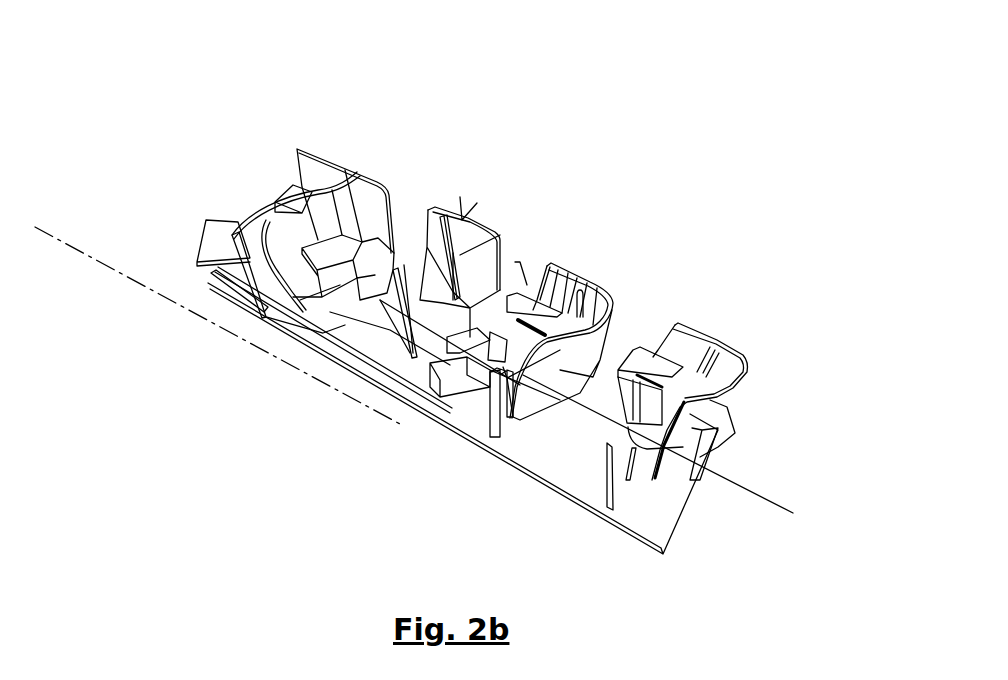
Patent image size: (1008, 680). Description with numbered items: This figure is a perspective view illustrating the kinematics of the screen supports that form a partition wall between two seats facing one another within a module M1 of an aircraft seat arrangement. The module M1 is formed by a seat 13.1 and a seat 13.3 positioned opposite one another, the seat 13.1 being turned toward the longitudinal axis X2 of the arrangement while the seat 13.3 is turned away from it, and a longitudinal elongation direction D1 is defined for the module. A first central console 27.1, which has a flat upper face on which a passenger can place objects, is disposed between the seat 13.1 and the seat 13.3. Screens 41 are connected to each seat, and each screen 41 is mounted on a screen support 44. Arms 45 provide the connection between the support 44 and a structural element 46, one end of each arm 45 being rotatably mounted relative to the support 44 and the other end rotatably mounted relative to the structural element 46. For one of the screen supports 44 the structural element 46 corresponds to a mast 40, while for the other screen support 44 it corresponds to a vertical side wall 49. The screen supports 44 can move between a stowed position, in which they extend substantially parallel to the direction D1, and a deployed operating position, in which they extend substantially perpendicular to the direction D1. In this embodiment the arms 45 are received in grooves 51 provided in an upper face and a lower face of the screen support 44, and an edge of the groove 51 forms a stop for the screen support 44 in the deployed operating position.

The seat 13.3 is at (260, 237).
The seat 13.1 is at (578, 300).
The first central console 27.1 is at (412, 245).
The mast 40 is at (390, 345).
The screen 41 is at (432, 212).
The screen support 44 is at (325, 292).
The arm 45 is at (395, 322).
The structural element 46 is at (462, 220).
The vertical side wall 49 is at (500, 243).
The groove 51 is at (350, 300).
The module M1 is at (186, 200).
The longitudinal axis X2 is at (136, 281).
The longitudinal elongation direction D1 is at (748, 492).